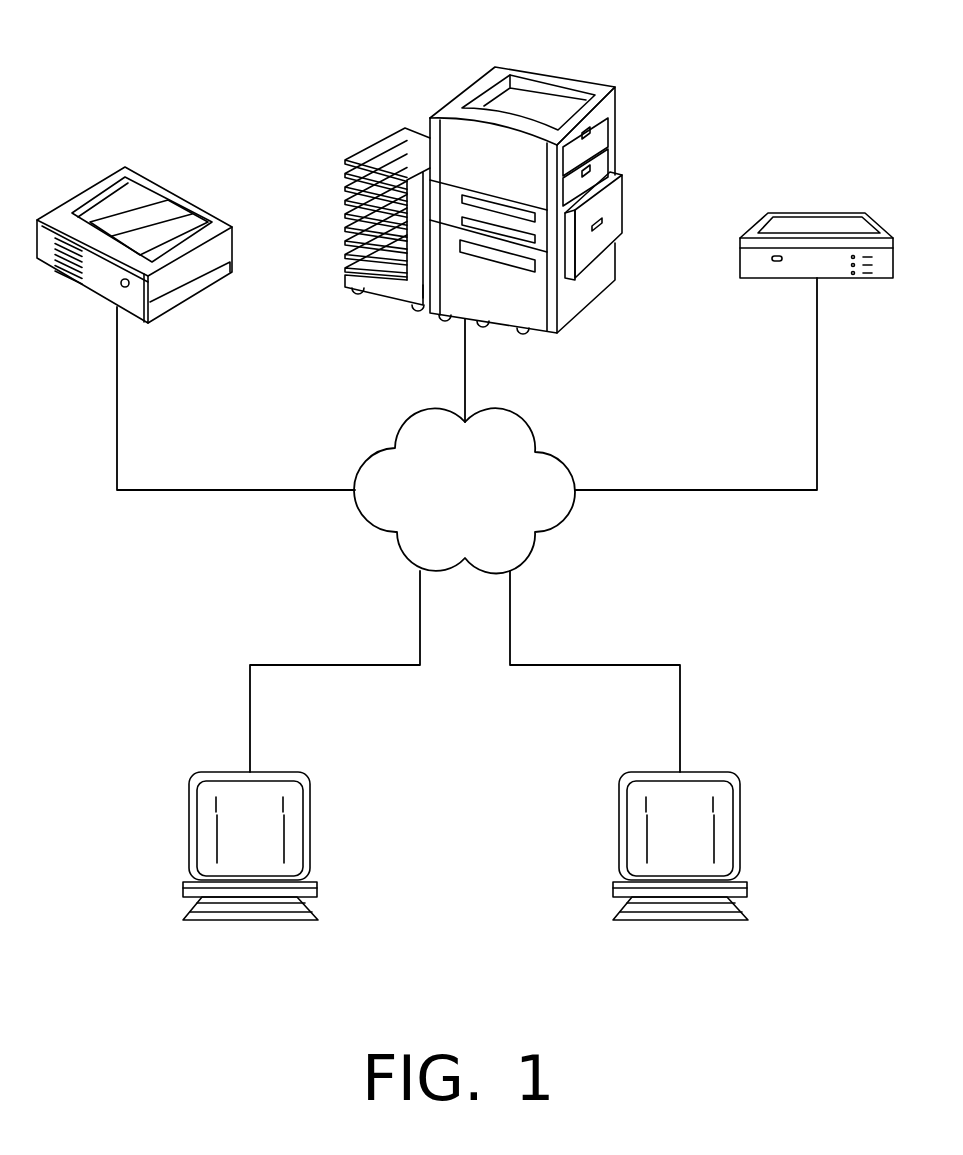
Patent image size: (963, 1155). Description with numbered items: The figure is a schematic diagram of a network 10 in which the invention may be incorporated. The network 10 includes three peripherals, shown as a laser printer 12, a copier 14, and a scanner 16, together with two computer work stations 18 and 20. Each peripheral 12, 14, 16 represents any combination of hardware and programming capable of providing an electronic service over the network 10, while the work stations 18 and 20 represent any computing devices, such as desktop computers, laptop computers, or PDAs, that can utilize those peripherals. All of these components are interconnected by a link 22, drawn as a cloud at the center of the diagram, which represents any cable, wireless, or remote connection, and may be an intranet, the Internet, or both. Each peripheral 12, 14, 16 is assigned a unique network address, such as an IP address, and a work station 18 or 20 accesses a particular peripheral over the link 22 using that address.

The network 10 is at (173, 62).
The peripheral 12 is at (110, 183).
The peripheral 14 is at (506, 68).
The peripheral 16 is at (768, 220).
The work station 18 is at (212, 773).
The work station 20 is at (642, 773).
The link 22 is at (518, 416).